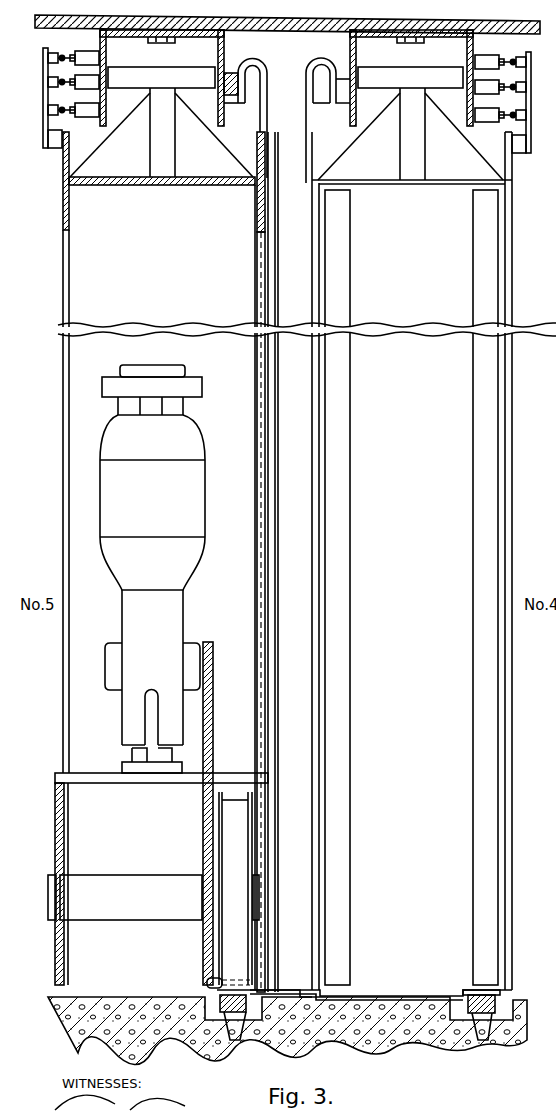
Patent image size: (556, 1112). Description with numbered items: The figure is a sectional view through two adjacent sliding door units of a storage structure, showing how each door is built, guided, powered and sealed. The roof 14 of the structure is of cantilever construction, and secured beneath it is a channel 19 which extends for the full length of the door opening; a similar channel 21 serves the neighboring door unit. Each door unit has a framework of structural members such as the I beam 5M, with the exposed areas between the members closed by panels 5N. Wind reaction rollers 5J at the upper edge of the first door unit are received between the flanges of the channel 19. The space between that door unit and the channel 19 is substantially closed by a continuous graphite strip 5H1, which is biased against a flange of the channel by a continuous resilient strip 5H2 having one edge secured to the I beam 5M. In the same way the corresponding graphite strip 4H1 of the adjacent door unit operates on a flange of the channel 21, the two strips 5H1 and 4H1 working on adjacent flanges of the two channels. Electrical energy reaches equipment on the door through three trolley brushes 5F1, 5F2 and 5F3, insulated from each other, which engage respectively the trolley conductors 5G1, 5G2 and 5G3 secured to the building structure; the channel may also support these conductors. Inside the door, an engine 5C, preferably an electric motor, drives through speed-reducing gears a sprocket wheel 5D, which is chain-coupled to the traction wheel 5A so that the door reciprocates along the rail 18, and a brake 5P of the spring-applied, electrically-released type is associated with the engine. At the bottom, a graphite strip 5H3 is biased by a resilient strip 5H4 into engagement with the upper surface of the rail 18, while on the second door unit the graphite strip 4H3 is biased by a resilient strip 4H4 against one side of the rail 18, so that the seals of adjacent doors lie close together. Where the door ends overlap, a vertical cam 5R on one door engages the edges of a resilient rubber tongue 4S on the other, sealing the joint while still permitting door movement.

The roof 14 is at (530, 24).
The channel 19 is at (140, 37).
The channel 21 is at (386, 38).
The rail 18 is at (230, 1035).
The trolley brush 5F3 is at (56, 58).
The trolley brush 5F2 is at (54, 81).
The trolley brush 5F1 is at (55, 110).
The trolley conductor 5G3 is at (64, 57).
The trolley conductor 5G2 is at (62, 83).
The trolley conductor 5G1 is at (64, 113).
The wind reaction roller 5J is at (168, 72).
The graphite strip 5H1 is at (232, 73).
The resilient strip 5H2 is at (270, 80).
The graphite strip 4H1 is at (341, 79).
The vertical cam 5R is at (270, 180).
The resilient tongue 4S is at (293, 184).
The I beam 5M is at (158, 186).
The panel 5N is at (262, 266).
The brake 5P is at (203, 388).
The engine 5C is at (205, 502).
The wheel 5A is at (234, 805).
The sprocket wheel 5D is at (205, 805).
The resilient strip 5H4 is at (207, 983).
The graphite strip 5H3 is at (214, 999).
The resilient strip 4H4 is at (325, 996).
The graphite strip 4H3 is at (253, 1000).